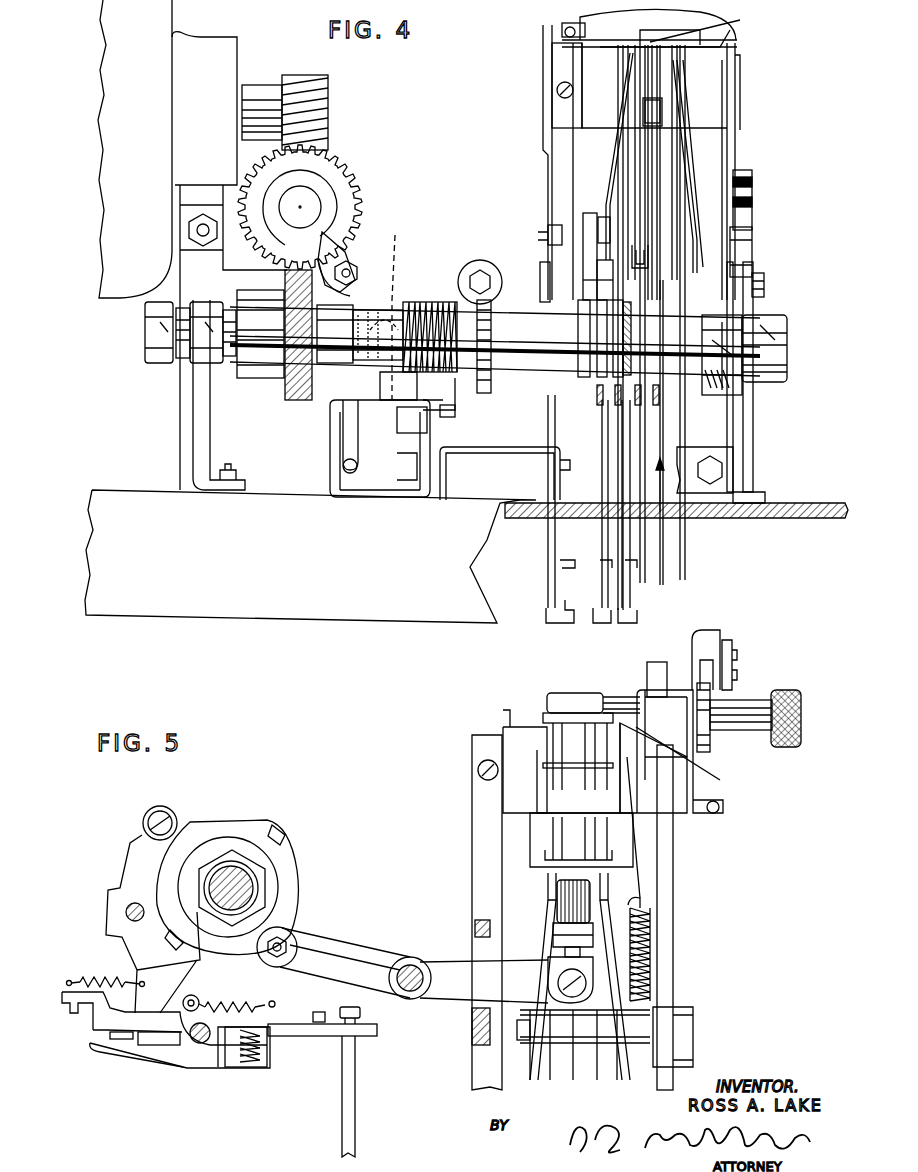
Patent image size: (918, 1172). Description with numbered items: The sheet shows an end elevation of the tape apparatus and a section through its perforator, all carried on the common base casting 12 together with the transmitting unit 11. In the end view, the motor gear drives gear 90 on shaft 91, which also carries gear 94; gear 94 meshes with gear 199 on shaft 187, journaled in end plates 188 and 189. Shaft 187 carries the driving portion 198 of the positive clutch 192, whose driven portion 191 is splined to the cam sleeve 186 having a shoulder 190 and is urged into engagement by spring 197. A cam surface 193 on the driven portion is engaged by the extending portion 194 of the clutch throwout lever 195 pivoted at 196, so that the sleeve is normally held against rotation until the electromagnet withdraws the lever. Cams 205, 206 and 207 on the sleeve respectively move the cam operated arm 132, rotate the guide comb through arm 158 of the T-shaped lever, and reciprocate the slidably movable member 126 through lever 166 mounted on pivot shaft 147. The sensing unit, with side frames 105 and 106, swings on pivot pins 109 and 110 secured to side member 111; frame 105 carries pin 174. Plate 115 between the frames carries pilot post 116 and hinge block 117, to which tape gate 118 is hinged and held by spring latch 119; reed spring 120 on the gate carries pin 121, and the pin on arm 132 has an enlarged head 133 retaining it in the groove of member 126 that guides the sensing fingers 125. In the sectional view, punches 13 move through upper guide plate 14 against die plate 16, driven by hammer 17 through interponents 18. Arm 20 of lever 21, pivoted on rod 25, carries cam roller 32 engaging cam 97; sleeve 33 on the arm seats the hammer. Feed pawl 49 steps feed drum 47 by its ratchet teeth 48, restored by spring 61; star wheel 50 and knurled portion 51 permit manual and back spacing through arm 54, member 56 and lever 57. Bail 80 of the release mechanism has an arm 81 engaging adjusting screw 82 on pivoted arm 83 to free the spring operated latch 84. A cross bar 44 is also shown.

In FIG. 4, the transmitting unit 11 is at (665, 520).
In FIG. 4, the base casting 12 is at (183, 612).
In FIG. 5, the punches 13 is at (595, 725).
In FIG. 5, the upper guide plate 14 is at (505, 725).
In FIG. 5, the die plate 16 is at (522, 713).
In FIG. 5, the hammer 17 is at (560, 880).
In FIG. 5, the interponents 18 is at (550, 853).
In FIG. 5, the arm 20 is at (548, 975).
In FIG. 5, the lever 21 is at (375, 955).
In FIG. 5, the rod 25 is at (410, 957).
In FIG. 5, the cam roller 32 is at (292, 933).
In FIG. 5, the sleeve 33 is at (608, 905).
In FIG. 5, the cross bar 44 is at (543, 765).
In FIG. 5, the feed drum 47 is at (568, 693).
In FIG. 5, the ratchet teeth 48 is at (622, 697).
In FIG. 5, the feed pawl 49 is at (689, 761).
In FIG. 5, the star wheel 50 is at (708, 740).
In FIG. 5, the knurled portion 51 is at (785, 747).
In FIG. 5, the arm 54 is at (660, 690).
In FIG. 5, the member 56 is at (705, 632).
In FIG. 5, the spring tensioned lever 57 is at (735, 675).
In FIG. 5, the spring 61 is at (652, 937).
In FIG. 4, the bail 80 is at (486, 447).
In FIG. 5, the arm 81 is at (358, 1073).
In FIG. 5, the adjusting screw 82 is at (360, 1033).
In FIG. 5, the pivoted arm 83 is at (270, 1056).
In FIG. 5, the spring operated latch 84 is at (120, 905).
In FIG. 4, the gear 90 is at (348, 180).
In FIG. 4, the shaft 91 is at (317, 197).
In FIG. 5, the shaft 91 is at (245, 880).
In FIG. 4, the gear 94 is at (352, 242).
In FIG. 5, the cam 97 is at (225, 840).
In FIG. 4, the side frame 105 is at (737, 93).
In FIG. 4, the side frame 106 is at (548, 175).
In FIG. 4, the pivot pin 109 is at (730, 240).
In FIG. 4, the pivot pin 110 is at (578, 245).
In FIG. 4, the side member 111 is at (752, 428).
In FIG. 4, the plate 115 is at (640, 52).
In FIG. 4, the pilot post 116 is at (730, 32).
In FIG. 4, the hinge block 117 is at (565, 30).
In FIG. 4, the tape gate 118 is at (740, 27).
In FIG. 4, the spring latch 119 is at (738, 75).
In FIG. 4, the reed spring 120 is at (630, 45).
In FIG. 4, the pin 121 is at (660, 42).
In FIG. 4, the sensing finger 125 is at (690, 165).
In FIG. 4, the slidably movable member 126 is at (660, 65).
In FIG. 4, the cam operated arm 132 is at (612, 180).
In FIG. 4, the enlarged head 133 is at (662, 68).
In FIG. 4, the pivot shaft 147 is at (770, 286).
In FIG. 4, the arm 158 is at (560, 255).
In FIG. 4, the lever 166 is at (640, 250).
In FIG. 4, the pin 174 is at (752, 190).
In FIG. 4, the sleeve 186 is at (522, 362).
In FIG. 4, the shaft 187 is at (229, 365).
In FIG. 4, the end plate 188 is at (735, 448).
In FIG. 4, the end plate 189 is at (190, 434).
In FIG. 4, the shoulder 190 is at (490, 292).
In FIG. 4, the driven portion 191 is at (372, 365).
In FIG. 4, the positive clutch 192 is at (330, 375).
In FIG. 4, the cam surface 193 is at (405, 400).
In FIG. 4, the extending portion 194 is at (390, 310).
In FIG. 4, the clutch throwout lever 195 is at (372, 432).
In FIG. 4, the pivot 196 is at (448, 420).
In FIG. 4, the spring 197 is at (430, 300).
In FIG. 4, the driving portion 198 is at (275, 355).
In FIG. 4, the gear 199 is at (290, 392).
In FIG. 4, the cam 205 is at (556, 377).
In FIG. 4, the cam 206 is at (580, 372).
In FIG. 4, the cam 207 is at (617, 380).